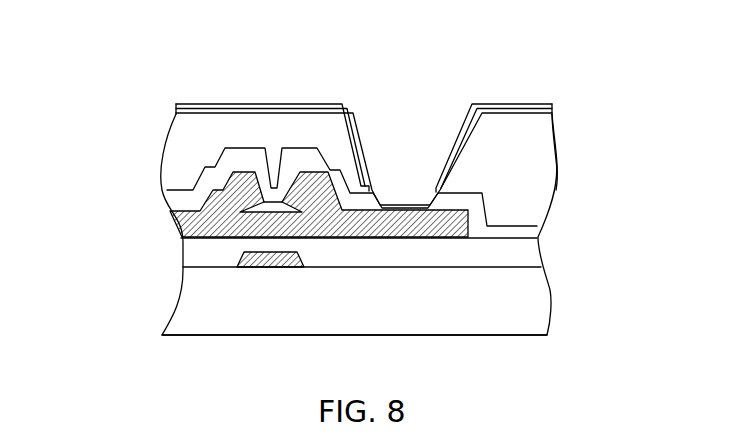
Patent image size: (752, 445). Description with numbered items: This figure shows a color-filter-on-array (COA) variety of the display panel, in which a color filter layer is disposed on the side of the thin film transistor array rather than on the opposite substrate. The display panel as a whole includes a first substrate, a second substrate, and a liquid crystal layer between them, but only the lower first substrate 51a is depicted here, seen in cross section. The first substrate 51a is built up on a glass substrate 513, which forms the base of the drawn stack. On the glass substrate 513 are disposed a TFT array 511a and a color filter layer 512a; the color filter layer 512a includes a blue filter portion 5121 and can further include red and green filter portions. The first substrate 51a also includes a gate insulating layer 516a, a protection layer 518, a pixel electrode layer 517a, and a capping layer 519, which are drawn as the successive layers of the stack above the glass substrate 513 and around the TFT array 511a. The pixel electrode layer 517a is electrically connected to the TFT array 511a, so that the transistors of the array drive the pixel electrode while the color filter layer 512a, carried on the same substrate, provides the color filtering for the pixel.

The first substrate 51a is at (143, 77).
The color filter layer 512a is at (172, 150).
The pixel electrode layer 517a is at (524, 106).
The capping layer 519 is at (552, 110).
The blue filter portion 5121 is at (560, 143).
The TFT array 511a is at (181, 228).
The protection layer 518 is at (533, 232).
The gate insulating layer 516a is at (533, 257).
The glass substrate 513 is at (183, 305).